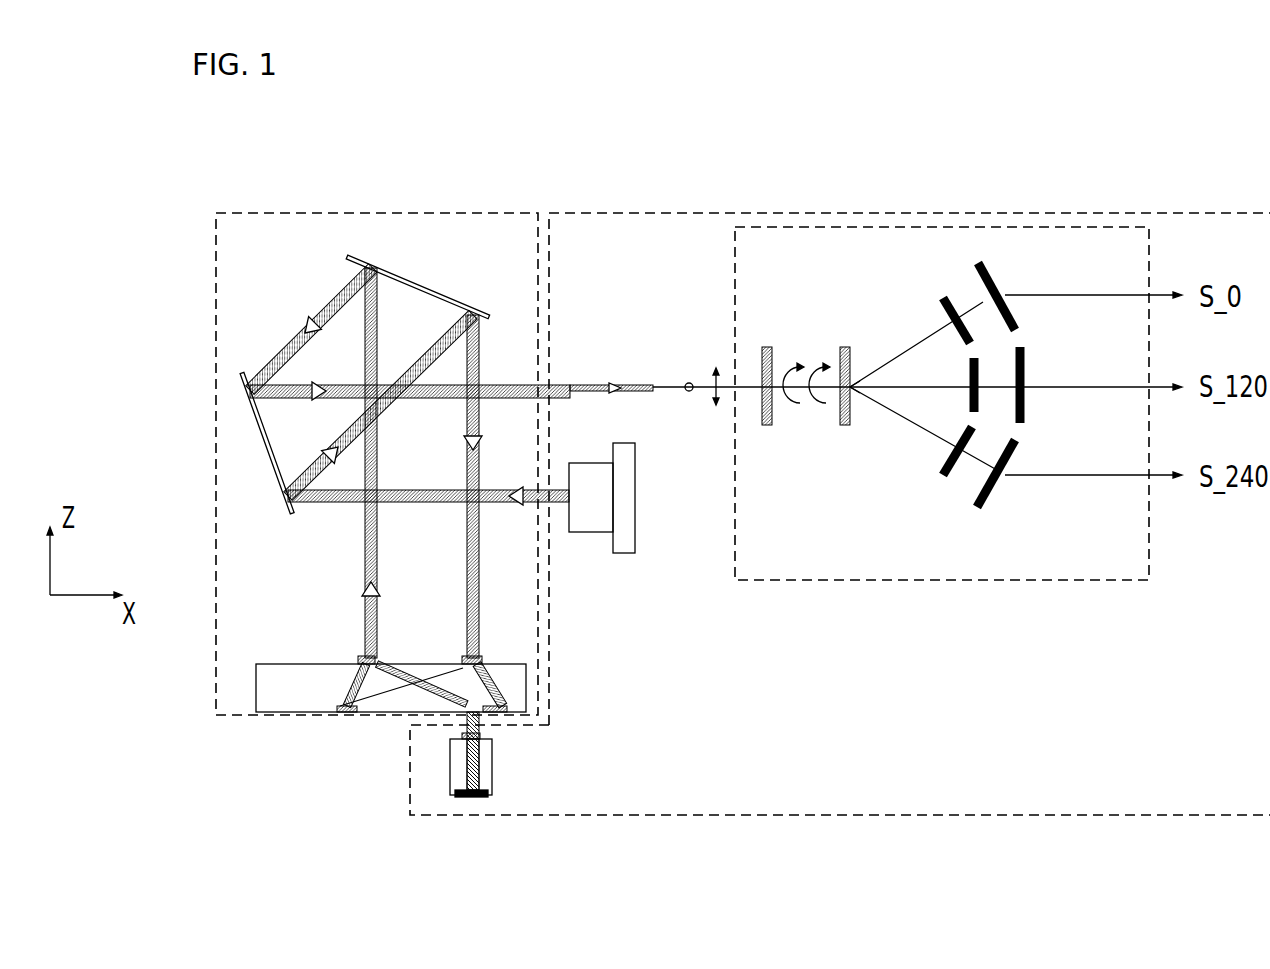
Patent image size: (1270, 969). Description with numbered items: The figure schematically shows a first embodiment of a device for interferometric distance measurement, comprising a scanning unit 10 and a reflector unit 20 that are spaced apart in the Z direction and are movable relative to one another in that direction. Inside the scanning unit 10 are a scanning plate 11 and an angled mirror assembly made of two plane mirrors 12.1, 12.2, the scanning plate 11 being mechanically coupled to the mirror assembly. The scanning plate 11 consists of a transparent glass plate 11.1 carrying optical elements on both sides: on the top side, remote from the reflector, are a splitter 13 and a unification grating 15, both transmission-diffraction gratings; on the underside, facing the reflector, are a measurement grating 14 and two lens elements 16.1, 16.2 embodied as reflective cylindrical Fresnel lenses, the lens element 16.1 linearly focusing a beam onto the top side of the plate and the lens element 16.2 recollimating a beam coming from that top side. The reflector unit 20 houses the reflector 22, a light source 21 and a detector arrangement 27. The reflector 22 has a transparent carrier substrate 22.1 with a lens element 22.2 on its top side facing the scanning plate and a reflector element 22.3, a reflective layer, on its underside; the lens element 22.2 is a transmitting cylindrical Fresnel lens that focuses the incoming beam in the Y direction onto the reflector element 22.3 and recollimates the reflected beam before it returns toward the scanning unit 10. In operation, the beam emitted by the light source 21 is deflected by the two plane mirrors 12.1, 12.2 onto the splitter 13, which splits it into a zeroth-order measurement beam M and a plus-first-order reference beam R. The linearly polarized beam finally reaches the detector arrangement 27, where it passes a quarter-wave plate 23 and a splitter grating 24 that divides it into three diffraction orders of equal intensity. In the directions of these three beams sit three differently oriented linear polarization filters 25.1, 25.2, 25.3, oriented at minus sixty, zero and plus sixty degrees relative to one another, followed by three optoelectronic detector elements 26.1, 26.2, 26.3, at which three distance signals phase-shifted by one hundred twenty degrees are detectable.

The scanning unit 10 is at (215, 310).
The scanning plate 11 is at (241, 703).
The transparent glass plate 11.1 is at (275, 675).
The plane mirror 12.1 is at (265, 442).
The plane mirror 12.2 is at (418, 278).
The splitter 13 is at (463, 655).
The measurement grating 14 is at (462, 712).
The unification grating 15 is at (357, 660).
The lens element 16.1 is at (507, 710).
The lens element 16.2 is at (340, 712).
The measurement beam M is at (460, 675).
The reference beam R is at (503, 680).
The reflector unit 20 is at (1065, 815).
The light source 21 is at (626, 510).
The reflector 22 is at (443, 790).
The transparent carrier substrate 22.1 is at (486, 773).
The lens element 22.2 is at (483, 737).
The reflector element 22.3 is at (470, 797).
The λ/4 plate 23 is at (768, 342).
The splitter grating 24 is at (838, 408).
The linear polarization filter 25.1 is at (950, 300).
The linear polarization filter 25.2 is at (968, 362).
The linear polarization filter 25.3 is at (945, 462).
The optoelectronic detector element 26.1 is at (985, 270).
The optoelectronic detector element 26.2 is at (1022, 400).
The optoelectronic detector element 26.3 is at (992, 495).
The detector arrangement 27 is at (895, 580).